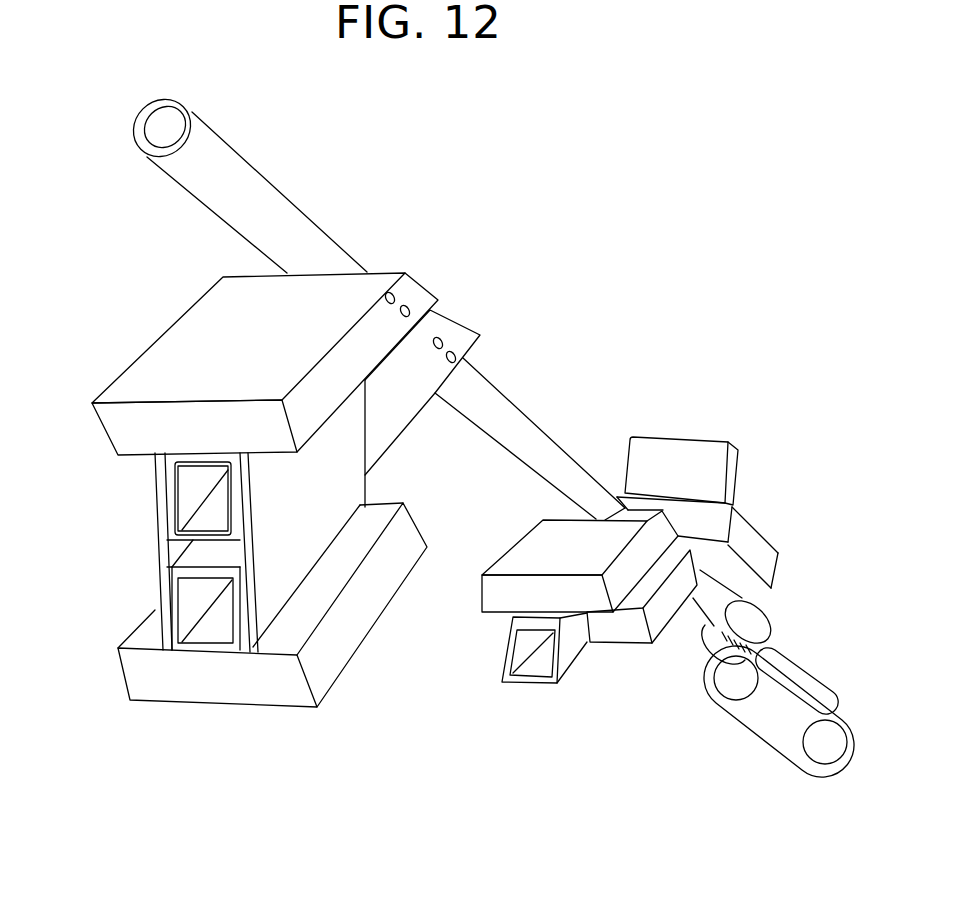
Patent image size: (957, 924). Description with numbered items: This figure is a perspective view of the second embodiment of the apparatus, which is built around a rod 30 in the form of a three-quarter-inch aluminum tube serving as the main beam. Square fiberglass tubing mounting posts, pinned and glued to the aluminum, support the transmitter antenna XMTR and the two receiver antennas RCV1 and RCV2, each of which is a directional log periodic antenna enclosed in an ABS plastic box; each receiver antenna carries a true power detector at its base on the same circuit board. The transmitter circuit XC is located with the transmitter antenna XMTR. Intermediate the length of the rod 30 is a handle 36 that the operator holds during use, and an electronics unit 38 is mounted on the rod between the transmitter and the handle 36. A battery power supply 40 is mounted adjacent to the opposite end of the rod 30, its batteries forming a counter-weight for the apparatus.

The receiver antenna RCV1 is at (200, 352).
The receiver antenna RCV2 is at (205, 683).
The rod 30 is at (497, 402).
The transmitter antenna XMTR is at (510, 594).
The transmitter circuit XC is at (612, 627).
The electronics unit 38 is at (748, 497).
The handle 36 is at (750, 618).
The battery power supply 40 is at (793, 730).